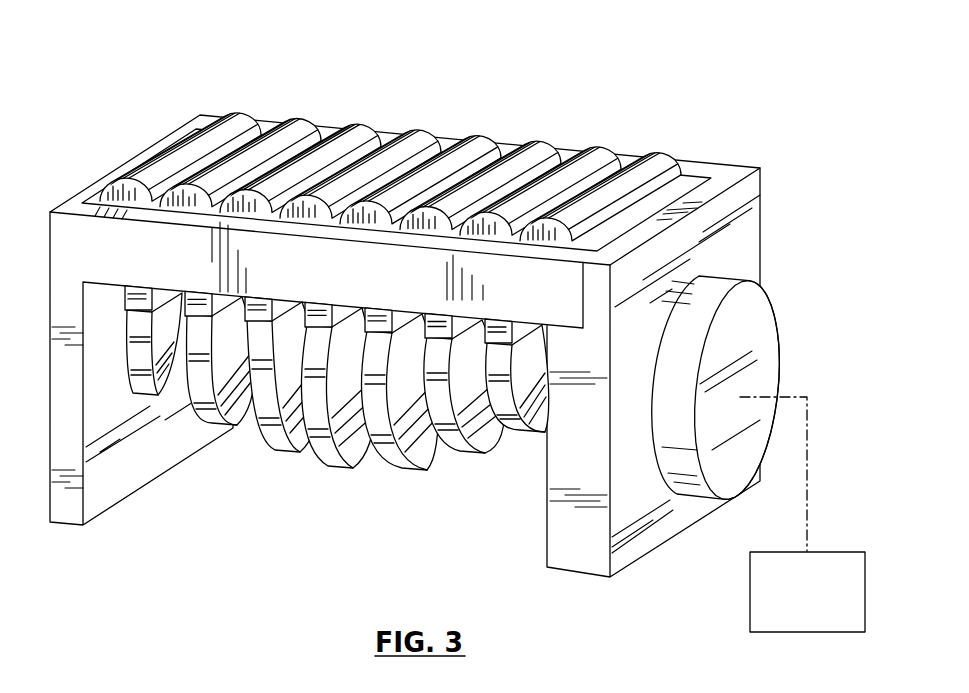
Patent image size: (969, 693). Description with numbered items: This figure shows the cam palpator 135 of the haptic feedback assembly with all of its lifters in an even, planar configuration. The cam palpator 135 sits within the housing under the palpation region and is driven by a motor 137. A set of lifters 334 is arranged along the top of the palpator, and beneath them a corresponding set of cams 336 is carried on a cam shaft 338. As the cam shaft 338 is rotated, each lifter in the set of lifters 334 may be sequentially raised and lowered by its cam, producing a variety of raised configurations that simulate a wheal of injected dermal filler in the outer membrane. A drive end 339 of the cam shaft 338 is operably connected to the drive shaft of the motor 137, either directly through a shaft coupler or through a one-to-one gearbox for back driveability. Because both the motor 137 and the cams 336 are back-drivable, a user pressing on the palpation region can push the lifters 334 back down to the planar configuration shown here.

The cam palpator 135 is at (129, 93).
The set of lifters 334 is at (536, 121).
The set of cams 336 is at (420, 487).
The cam shaft 338 is at (301, 444).
The drive end 339 is at (785, 302).
The motor 137 is at (787, 613).